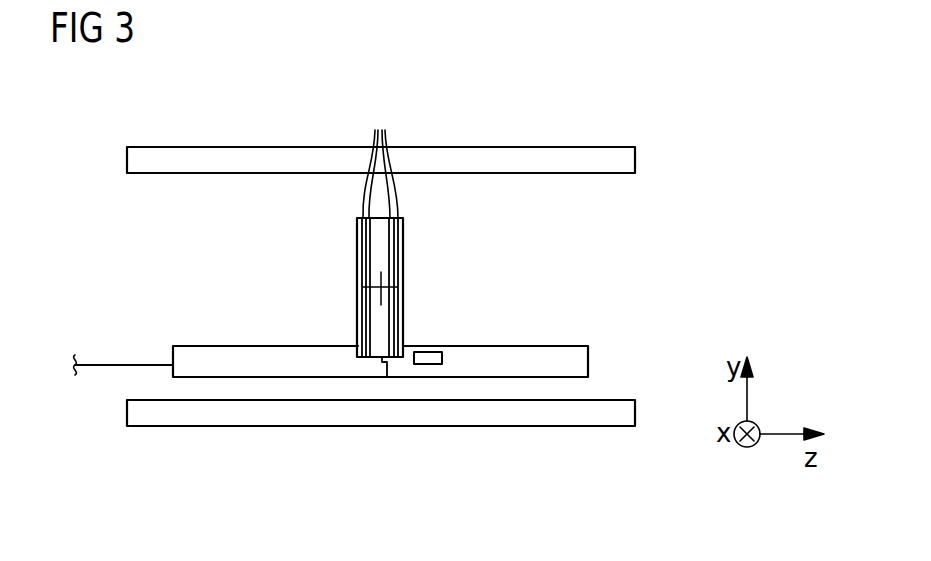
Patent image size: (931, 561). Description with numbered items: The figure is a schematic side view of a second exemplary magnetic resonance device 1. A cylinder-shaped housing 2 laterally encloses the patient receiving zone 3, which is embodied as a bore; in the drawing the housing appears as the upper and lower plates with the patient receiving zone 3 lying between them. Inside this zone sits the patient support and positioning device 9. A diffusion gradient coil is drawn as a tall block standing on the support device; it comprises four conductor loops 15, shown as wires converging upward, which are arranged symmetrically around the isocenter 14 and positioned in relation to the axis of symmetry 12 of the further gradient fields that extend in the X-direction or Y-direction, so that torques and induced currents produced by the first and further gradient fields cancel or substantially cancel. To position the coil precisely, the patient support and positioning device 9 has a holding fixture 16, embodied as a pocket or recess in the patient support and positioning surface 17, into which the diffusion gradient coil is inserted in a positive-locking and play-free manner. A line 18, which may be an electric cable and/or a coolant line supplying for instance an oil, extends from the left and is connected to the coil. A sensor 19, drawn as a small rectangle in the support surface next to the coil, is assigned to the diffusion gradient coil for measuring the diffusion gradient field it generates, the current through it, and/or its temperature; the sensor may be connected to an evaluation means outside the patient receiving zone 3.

The magnetic resonance device 1 is at (451, 103).
The housing 2 is at (547, 147).
The patient receiving zone 3 is at (562, 224).
The patient support and positioning device 9 is at (573, 358).
The axis of symmetry 12 is at (325, 287).
The isocenter 14 is at (381, 284).
The conductor loops 15 is at (380, 156).
The holding fixture 16 is at (387, 377).
The patient support and positioning surface 17 is at (517, 346).
The line 18 is at (118, 365).
The sensor 19 is at (429, 352).